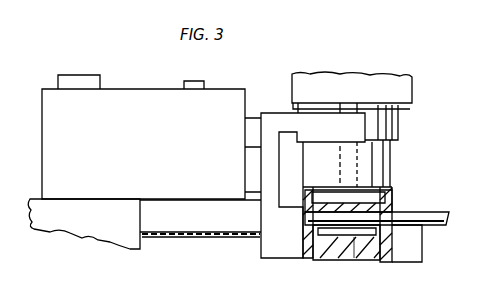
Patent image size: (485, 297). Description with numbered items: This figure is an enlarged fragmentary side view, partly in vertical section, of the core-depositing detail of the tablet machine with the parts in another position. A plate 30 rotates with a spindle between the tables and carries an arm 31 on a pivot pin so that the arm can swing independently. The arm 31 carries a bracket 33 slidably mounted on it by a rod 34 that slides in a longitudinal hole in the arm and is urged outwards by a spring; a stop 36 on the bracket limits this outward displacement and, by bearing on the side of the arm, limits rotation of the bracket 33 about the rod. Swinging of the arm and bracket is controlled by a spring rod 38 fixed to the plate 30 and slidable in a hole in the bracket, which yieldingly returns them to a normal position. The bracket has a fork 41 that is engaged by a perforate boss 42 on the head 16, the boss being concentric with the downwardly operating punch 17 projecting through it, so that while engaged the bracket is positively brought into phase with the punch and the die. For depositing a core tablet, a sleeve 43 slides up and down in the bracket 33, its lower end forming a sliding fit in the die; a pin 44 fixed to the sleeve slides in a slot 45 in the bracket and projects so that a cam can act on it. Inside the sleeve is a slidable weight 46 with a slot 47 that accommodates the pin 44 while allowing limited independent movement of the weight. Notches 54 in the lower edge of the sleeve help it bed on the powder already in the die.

The head 16 is at (332, 88).
The punch 17 is at (383, 168).
The plate 30 is at (92, 223).
The arm 31 is at (123, 100).
The bracket 33 is at (262, 252).
The rod 34 is at (253, 128).
The stop 36 is at (198, 87).
The spring rod 38 is at (175, 237).
The fork 41 is at (395, 128).
The perforate boss 42 is at (398, 141).
The sleeve 43 is at (393, 198).
The pin 44 is at (440, 214).
The slot 45 is at (415, 245).
The weight 46 is at (332, 255).
The slot 47 is at (363, 233).
The notches 54 is at (305, 258).